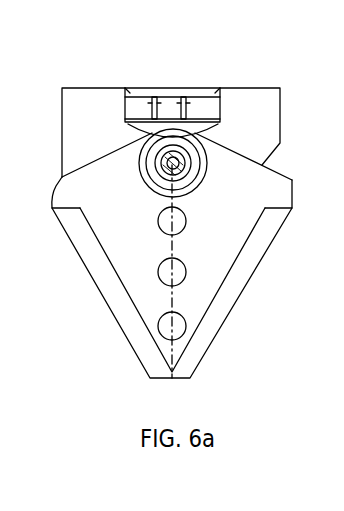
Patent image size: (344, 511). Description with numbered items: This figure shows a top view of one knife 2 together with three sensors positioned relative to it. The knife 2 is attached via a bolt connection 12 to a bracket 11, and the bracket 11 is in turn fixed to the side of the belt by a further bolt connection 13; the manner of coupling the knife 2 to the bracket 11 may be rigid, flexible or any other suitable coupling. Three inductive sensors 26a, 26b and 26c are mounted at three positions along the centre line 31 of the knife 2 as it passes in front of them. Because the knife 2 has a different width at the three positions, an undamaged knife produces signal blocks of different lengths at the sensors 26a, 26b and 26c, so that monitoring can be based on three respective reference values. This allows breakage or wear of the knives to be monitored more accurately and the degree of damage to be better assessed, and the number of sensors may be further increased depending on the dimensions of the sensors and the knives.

The bracket 11 is at (252, 100).
The knife 2 is at (228, 217).
The bolt connection 12 is at (144, 145).
The further bolt connection 13 is at (171, 107).
The inductive sensor 26a is at (160, 217).
The inductive sensor 26b is at (158, 273).
The inductive sensor 26c is at (168, 331).
The centre line 31 is at (172, 290).